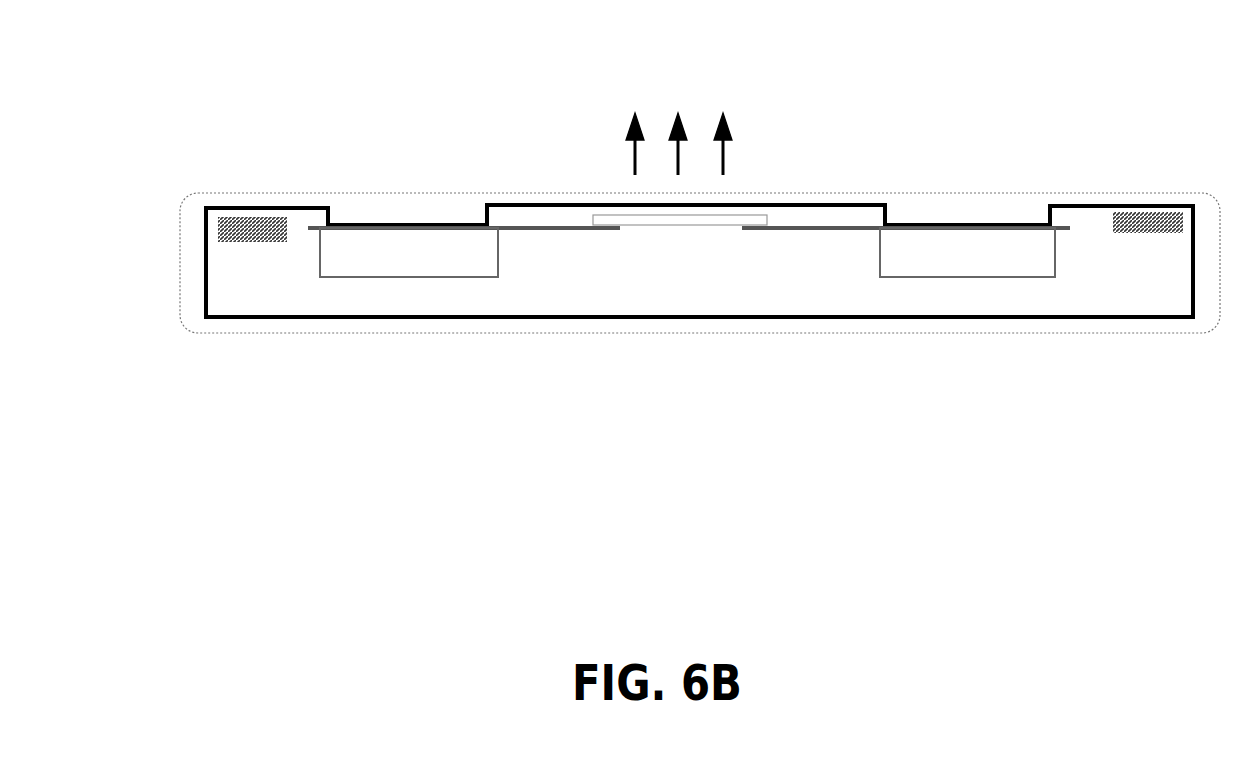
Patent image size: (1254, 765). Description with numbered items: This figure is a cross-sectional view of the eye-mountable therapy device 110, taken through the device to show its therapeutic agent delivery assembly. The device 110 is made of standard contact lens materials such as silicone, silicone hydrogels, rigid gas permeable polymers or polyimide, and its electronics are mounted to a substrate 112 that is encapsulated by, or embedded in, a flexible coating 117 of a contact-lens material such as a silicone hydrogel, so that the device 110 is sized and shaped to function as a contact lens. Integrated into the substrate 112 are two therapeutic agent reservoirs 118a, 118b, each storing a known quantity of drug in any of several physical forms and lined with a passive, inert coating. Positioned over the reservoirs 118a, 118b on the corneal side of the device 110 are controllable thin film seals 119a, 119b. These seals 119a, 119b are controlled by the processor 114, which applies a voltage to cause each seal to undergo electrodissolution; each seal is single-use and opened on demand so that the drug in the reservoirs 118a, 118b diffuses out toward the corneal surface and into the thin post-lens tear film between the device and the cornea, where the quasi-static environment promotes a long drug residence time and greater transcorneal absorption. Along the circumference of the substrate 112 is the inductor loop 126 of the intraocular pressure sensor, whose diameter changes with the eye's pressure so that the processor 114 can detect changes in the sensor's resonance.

The eye-mountable therapy device 110 is at (667, 229).
The substrate 112 is at (490, 292).
The processor 114 is at (680, 232).
The flexible coating 117 is at (233, 325).
The therapeutic agent reservoir 118a is at (419, 222).
The therapeutic agent reservoir 118b is at (925, 277).
The controllable thin film seal 119a is at (552, 225).
The controllable thin film seal 119b is at (807, 225).
The inductor loop 126 is at (1148, 223).